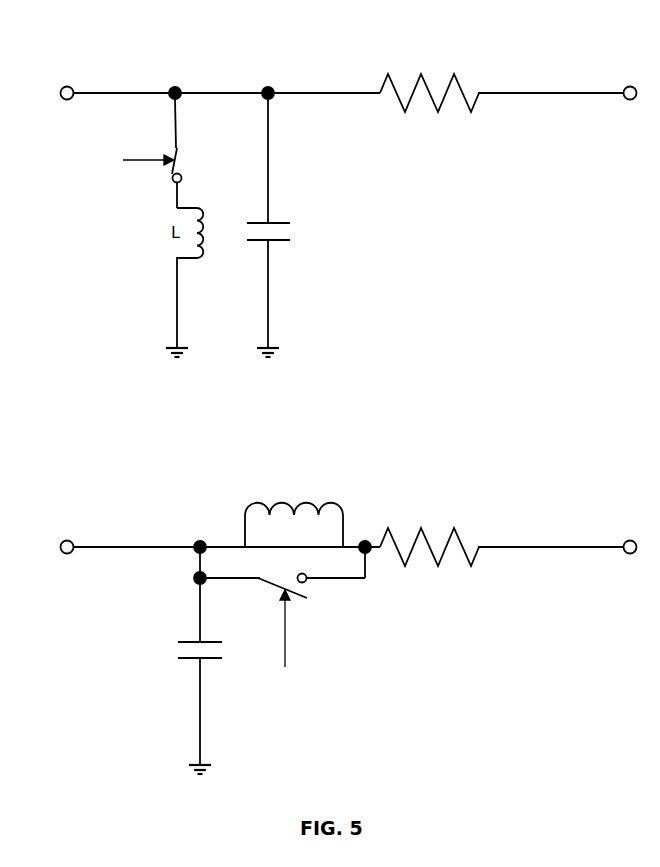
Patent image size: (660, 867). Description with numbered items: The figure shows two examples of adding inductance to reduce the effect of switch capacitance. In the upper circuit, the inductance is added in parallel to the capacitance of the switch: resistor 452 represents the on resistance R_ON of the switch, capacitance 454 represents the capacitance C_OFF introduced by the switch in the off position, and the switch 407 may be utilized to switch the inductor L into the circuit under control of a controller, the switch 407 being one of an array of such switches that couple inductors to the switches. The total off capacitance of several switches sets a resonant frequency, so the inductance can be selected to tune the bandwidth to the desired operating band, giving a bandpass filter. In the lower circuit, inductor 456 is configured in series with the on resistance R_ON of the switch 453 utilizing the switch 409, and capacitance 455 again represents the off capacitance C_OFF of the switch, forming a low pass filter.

The resistor 452 is at (433, 47).
The capacitance 454 is at (326, 242).
The switch 407 is at (178, 154).
The inductor 456 is at (276, 454).
The switch 453 is at (437, 498).
The capacitance 455 is at (104, 651).
The switch 409 is at (309, 587).